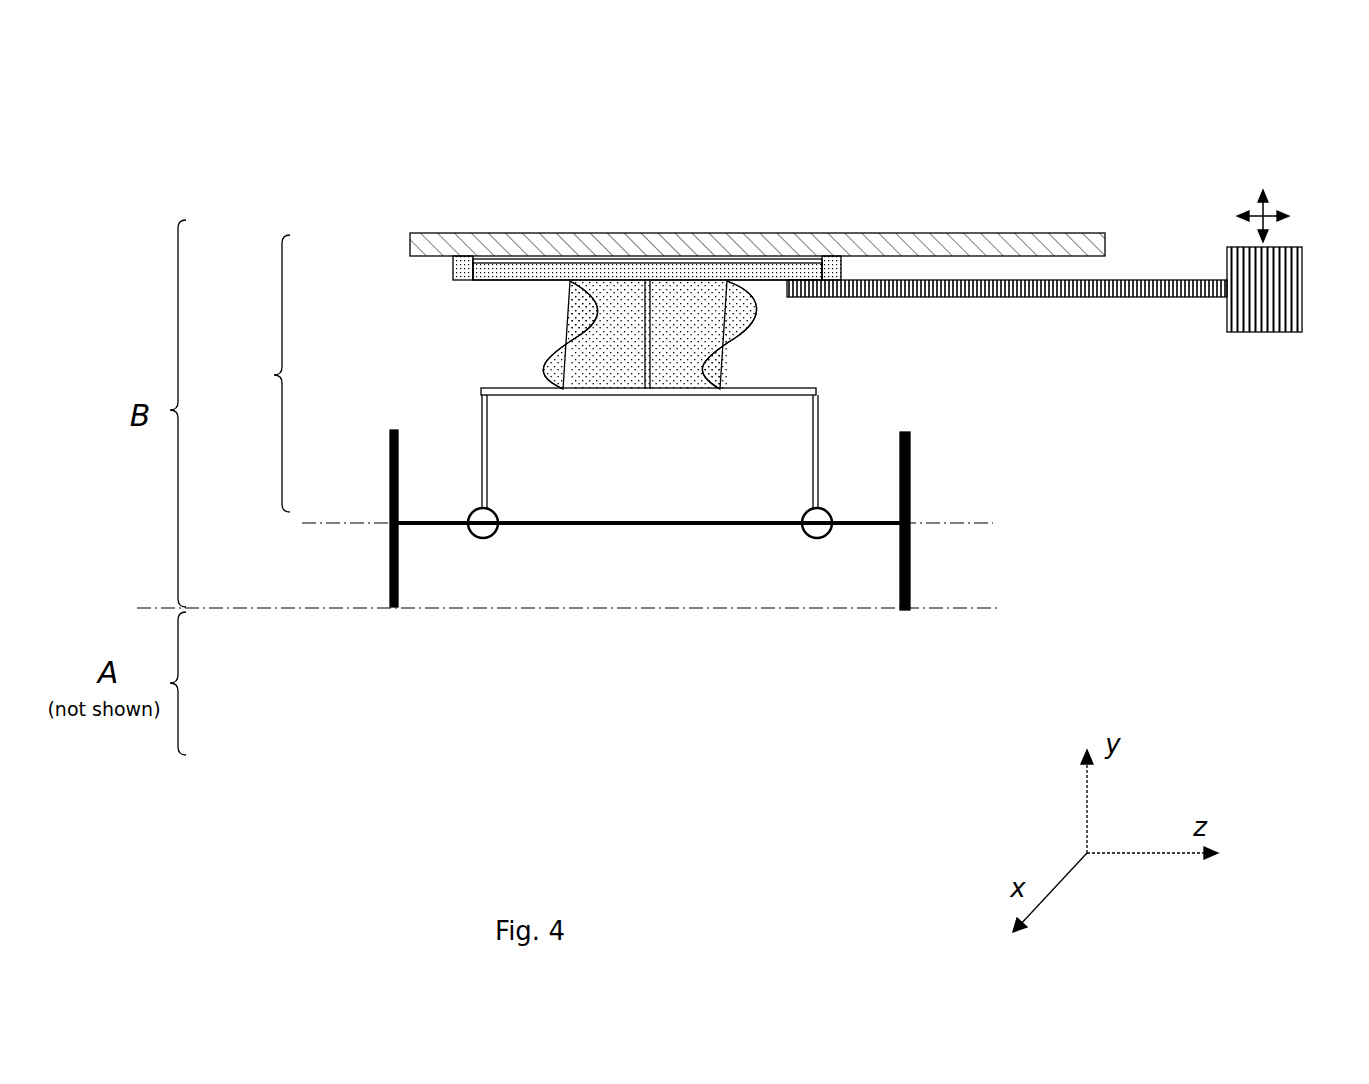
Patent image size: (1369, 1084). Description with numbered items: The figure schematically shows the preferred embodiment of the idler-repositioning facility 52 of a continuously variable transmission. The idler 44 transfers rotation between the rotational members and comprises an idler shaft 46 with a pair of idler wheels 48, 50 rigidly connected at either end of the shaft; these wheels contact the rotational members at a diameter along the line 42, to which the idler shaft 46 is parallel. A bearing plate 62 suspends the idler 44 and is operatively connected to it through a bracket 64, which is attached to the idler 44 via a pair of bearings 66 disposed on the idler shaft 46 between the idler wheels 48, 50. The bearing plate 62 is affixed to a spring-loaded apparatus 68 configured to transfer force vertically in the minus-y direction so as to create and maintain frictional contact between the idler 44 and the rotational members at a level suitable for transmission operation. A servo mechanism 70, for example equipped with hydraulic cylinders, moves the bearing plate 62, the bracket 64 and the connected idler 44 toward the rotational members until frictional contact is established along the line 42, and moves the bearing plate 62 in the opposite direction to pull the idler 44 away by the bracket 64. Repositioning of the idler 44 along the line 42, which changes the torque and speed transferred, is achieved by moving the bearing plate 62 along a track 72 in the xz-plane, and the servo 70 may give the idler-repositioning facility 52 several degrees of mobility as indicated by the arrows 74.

The line 42 is at (457, 610).
The idler 44 is at (938, 557).
The idler shaft 46 is at (435, 530).
The idler wheel 48 is at (383, 578).
The idler wheel 50 is at (910, 582).
The idler-repositioning facility 52 is at (257, 370).
The bearing plate 62 is at (487, 282).
The bracket 64 is at (822, 405).
The bearings 66 is at (800, 532).
The spring-loaded apparatus 68 is at (698, 327).
The servo mechanism 70 is at (1275, 332).
The track 72 is at (437, 233).
The arrows 74 is at (1292, 200).